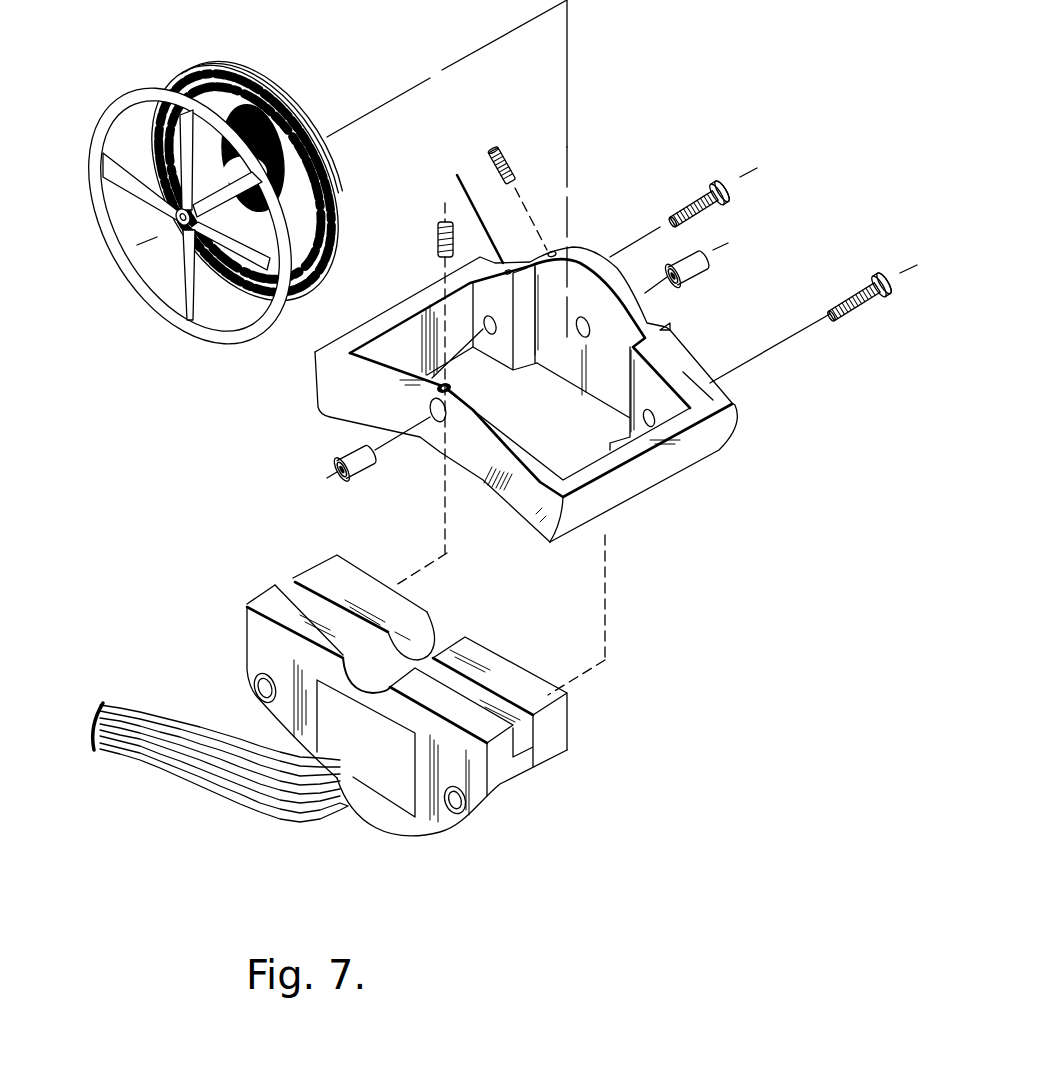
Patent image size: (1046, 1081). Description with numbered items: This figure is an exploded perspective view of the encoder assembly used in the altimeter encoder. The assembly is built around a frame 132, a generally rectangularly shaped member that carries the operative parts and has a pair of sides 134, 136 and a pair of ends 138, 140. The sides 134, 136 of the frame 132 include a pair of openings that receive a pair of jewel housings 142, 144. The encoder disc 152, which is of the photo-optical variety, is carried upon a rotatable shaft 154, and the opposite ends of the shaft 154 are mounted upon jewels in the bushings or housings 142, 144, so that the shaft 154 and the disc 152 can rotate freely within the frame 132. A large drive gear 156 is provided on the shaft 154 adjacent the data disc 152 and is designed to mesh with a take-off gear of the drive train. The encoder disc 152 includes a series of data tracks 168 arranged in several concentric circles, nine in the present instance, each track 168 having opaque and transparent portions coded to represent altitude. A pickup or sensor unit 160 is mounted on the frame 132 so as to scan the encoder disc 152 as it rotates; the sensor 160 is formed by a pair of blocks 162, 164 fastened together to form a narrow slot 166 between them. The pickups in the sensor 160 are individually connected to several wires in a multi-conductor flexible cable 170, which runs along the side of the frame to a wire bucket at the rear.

The frame 132 is at (322, 426).
The side 134 is at (522, 488).
The side 136 is at (735, 405).
The end 138 is at (369, 328).
The end 140 is at (707, 443).
The jewel housing 142 is at (373, 467).
The jewel housing 144 is at (693, 287).
The encoder disc 152 is at (257, 166).
The rotatable shaft 154 is at (177, 216).
The large drive gear 156 is at (192, 332).
The sensor unit 160 is at (429, 680).
The block 162 is at (328, 558).
The block 164 is at (277, 592).
The narrow slot 166 is at (293, 587).
The data tracks 168 is at (334, 257).
The flexible cable 170 is at (187, 745).